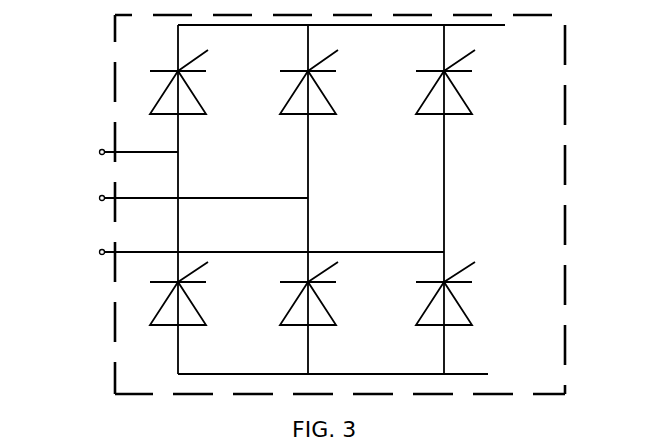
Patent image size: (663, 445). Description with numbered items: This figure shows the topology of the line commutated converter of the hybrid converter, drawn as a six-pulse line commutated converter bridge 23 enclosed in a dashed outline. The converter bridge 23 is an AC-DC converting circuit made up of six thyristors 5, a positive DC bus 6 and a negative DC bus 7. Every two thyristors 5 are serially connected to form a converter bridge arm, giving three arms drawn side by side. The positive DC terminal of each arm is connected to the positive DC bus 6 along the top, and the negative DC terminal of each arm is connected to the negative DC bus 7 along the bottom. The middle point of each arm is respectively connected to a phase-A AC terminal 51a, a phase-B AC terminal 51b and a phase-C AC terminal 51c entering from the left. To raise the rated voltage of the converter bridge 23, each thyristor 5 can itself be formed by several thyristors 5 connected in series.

The thyristor 5 is at (155, 102).
The positive DC bus 6 is at (482, 26).
The negative DC bus 7 is at (468, 370).
The six-pulse line commutated converter bridge 23 is at (566, 222).
The phase-A AC terminal 51a is at (98, 153).
The phase-B AC terminal 51b is at (98, 198).
The phase-C AC terminal 51c is at (98, 252).